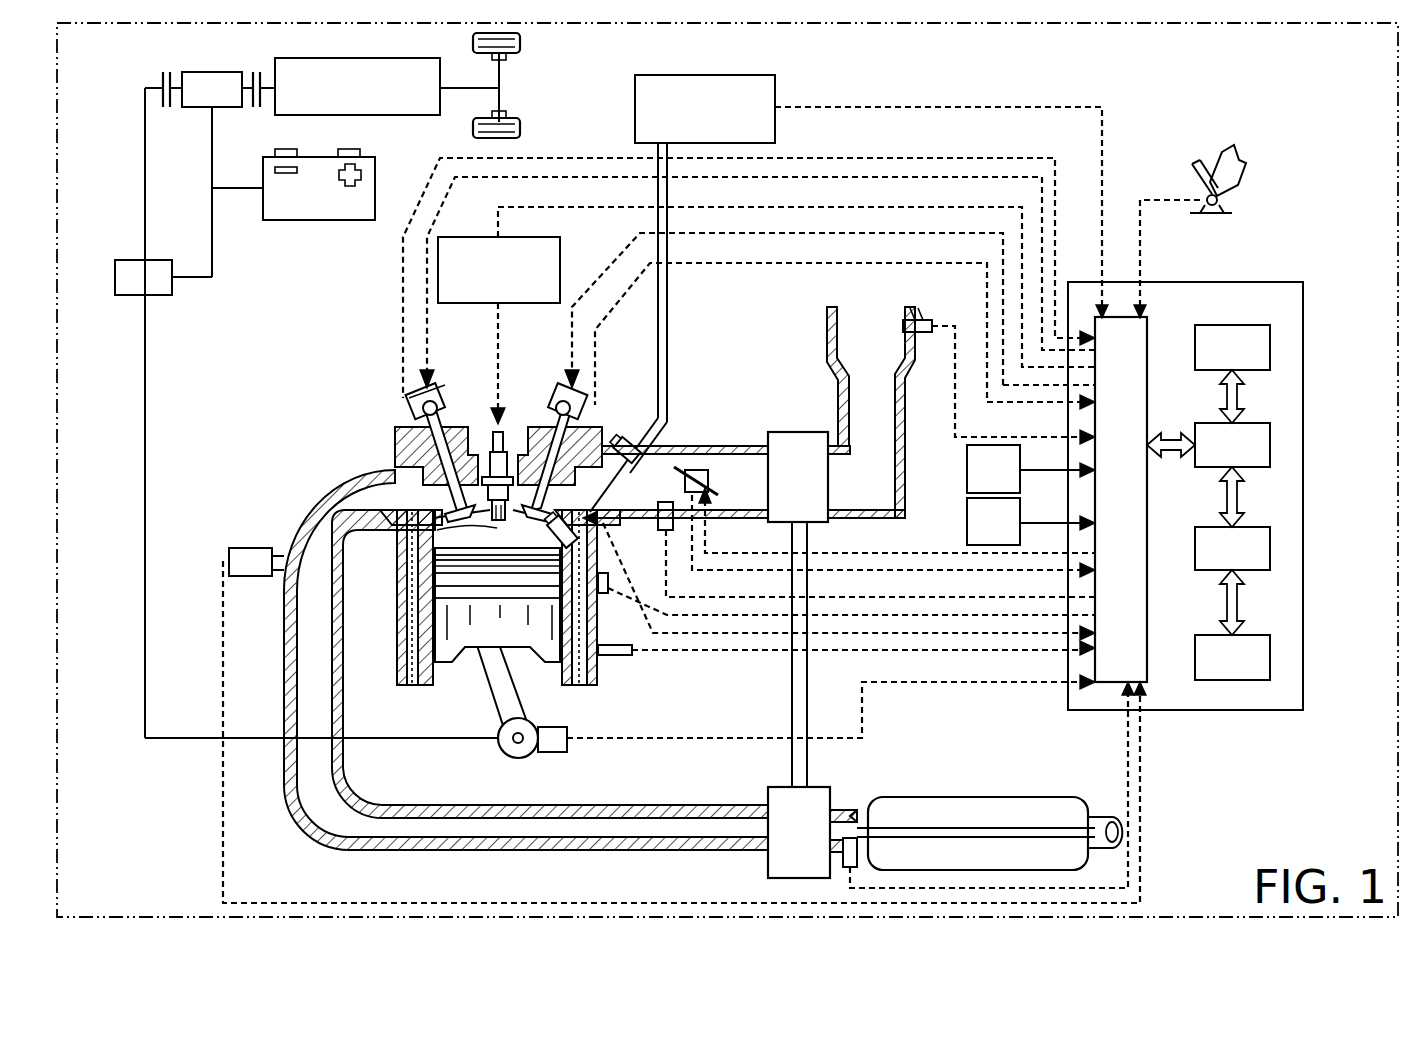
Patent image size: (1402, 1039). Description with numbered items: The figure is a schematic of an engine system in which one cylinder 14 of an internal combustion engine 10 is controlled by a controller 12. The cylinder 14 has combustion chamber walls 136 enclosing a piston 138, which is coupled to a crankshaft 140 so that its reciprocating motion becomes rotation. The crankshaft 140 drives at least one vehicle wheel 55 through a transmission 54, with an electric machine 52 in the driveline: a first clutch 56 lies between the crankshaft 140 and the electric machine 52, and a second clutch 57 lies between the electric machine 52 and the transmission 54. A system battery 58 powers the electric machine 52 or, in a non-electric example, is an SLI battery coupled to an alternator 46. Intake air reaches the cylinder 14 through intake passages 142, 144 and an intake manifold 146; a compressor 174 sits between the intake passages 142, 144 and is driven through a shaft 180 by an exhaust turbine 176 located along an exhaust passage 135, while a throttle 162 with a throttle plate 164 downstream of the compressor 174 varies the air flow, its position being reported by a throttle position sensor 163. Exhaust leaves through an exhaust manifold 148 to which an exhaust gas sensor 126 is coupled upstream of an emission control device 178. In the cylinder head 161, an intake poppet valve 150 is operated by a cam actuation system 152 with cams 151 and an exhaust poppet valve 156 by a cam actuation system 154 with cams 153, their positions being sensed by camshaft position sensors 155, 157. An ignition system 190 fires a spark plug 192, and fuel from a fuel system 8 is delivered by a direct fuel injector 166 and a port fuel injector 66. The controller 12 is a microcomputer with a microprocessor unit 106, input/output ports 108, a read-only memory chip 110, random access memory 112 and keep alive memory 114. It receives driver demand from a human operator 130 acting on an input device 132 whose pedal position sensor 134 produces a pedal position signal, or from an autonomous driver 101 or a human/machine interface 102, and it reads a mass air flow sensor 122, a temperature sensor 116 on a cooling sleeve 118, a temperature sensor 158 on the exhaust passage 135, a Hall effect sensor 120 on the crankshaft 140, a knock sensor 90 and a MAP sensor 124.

The fuel system 8 is at (740, 75).
The internal combustion engine 10 is at (652, 530).
The controller 12 is at (1303, 285).
The cylinder 14 is at (440, 528).
The alternator 46 is at (118, 295).
The electric machine 52 is at (198, 72).
The transmission 54 is at (420, 115).
The vehicle wheel 55 is at (473, 42).
The first clutch 56 is at (163, 80).
The second clutch 57 is at (253, 75).
The system battery 58 is at (312, 220).
The port fuel injector 66 is at (626, 444).
The knock sensor 90 is at (605, 657).
The autonomous driver 101 is at (1031, 469).
The human/machine interface 102 is at (1031, 521).
The microprocessor unit 106 is at (1270, 440).
The input/output ports 108 is at (1150, 325).
The read-only memory chip 110 is at (1270, 345).
The random access memory 112 is at (1270, 548).
The keep alive memory 114 is at (1270, 655).
The temperature sensor 116 is at (607, 596).
The cooling sleeve 118 is at (597, 660).
The Hall effect sensor 120 is at (560, 752).
The mass air flow sensor 122 is at (925, 320).
The MAP sensor 124 is at (668, 532).
The exhaust gas sensor 126 is at (229, 555).
The human vehicle operator 130 is at (1245, 163).
The input device 132 is at (1195, 177).
The pedal position sensor 134 is at (1220, 200).
The exhaust passage 135 is at (672, 812).
The combustion chamber walls 136 is at (440, 675).
The piston 138 is at (480, 636).
The crankshaft 140 is at (507, 752).
The intake passage 142 is at (861, 353).
The intake passage 144 is at (730, 490).
The intake manifold 146 is at (640, 490).
The exhaust manifold 148 is at (352, 500).
The intake poppet valve 150 is at (510, 460).
The cam 151 is at (548, 400).
The cam actuation system 152 is at (567, 392).
The cam 153 is at (445, 405).
The cam actuation system 154 is at (432, 392).
The camshaft position sensor 155 is at (585, 407).
The exhaust poppet valve 156 is at (430, 480).
The camshaft position sensor 157 is at (408, 405).
The temperature sensor 158 is at (848, 870).
The cylinder head 161 is at (407, 453).
The throttle 162 is at (705, 470).
The throttle position sensor 163 is at (700, 516).
The throttle plate 164 is at (676, 468).
The direct fuel injector 166 is at (560, 516).
The compressor 174 is at (783, 487).
The exhaust turbine 176 is at (783, 840).
The emission control device 178 is at (965, 797).
The shaft 180 is at (808, 745).
The ignition system 190 is at (455, 237).
The spark plug 192 is at (490, 445).